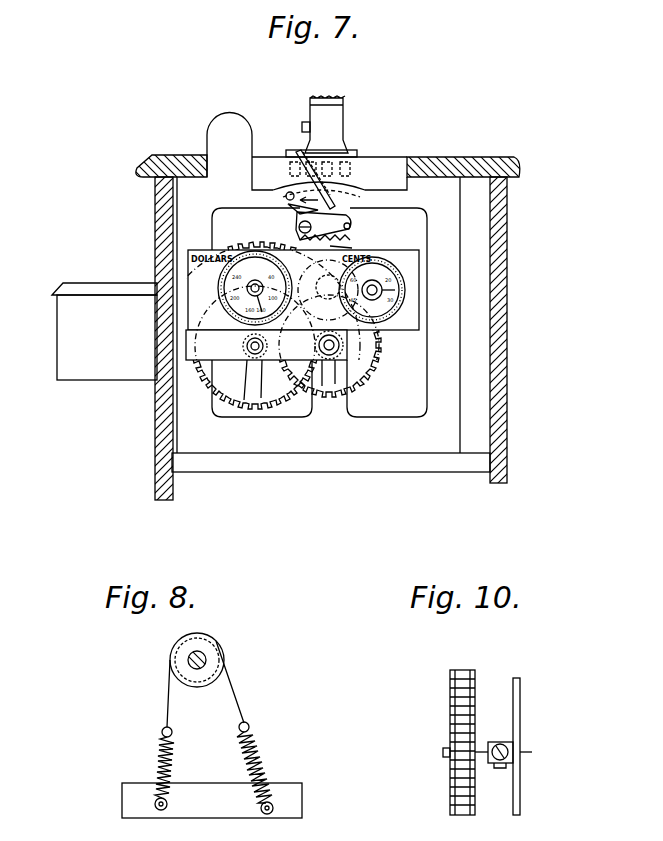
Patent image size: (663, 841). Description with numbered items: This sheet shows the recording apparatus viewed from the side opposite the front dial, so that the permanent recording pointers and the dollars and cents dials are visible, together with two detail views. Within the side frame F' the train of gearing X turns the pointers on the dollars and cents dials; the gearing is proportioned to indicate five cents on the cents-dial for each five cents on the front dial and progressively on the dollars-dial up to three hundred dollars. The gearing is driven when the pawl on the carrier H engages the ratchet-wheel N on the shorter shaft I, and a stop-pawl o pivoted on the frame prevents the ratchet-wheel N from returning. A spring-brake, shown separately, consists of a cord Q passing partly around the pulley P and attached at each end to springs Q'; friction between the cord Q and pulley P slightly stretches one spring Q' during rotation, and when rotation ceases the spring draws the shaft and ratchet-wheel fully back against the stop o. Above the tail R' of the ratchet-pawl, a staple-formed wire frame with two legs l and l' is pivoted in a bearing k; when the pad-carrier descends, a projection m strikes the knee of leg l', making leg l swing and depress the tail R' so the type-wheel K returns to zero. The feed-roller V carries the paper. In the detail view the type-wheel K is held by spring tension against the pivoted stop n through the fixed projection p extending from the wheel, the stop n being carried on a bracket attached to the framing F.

In FIG. 7, the side frame F' is at (328, 307).
In FIG. 8, the side frame F' is at (212, 800).
In FIG. 7, the feed-roller V is at (104, 331).
In FIG. 7, the train of gearing X is at (293, 318).
In FIG. 7, the projection m is at (302, 120).
In FIG. 7, the bearing k is at (298, 150).
In FIG. 7, the leg of staple-lever l' is at (321, 164).
In FIG. 7, the leg of staple-lever l is at (308, 179).
In FIG. 7, the tail of pawl R' is at (297, 220).
In FIG. 7, the carrier H is at (352, 222).
In FIG. 7, the ratchet-wheel N is at (358, 250).
In FIG. 8, the pulley P is at (212, 662).
In FIG. 8, the shorter shaft I is at (188, 662).
In FIG. 8, the cord Q is at (196, 719).
In FIG. 8, the spring Q' is at (265, 767).
In FIG. 10, the type-wheel K is at (459, 742).
In FIG. 10, the fixed projection p is at (488, 746).
In FIG. 10, the stop-pawl o is at (500, 741).
In FIG. 10, the pivoted stop n is at (495, 764).
In FIG. 10, the side frame F is at (528, 746).